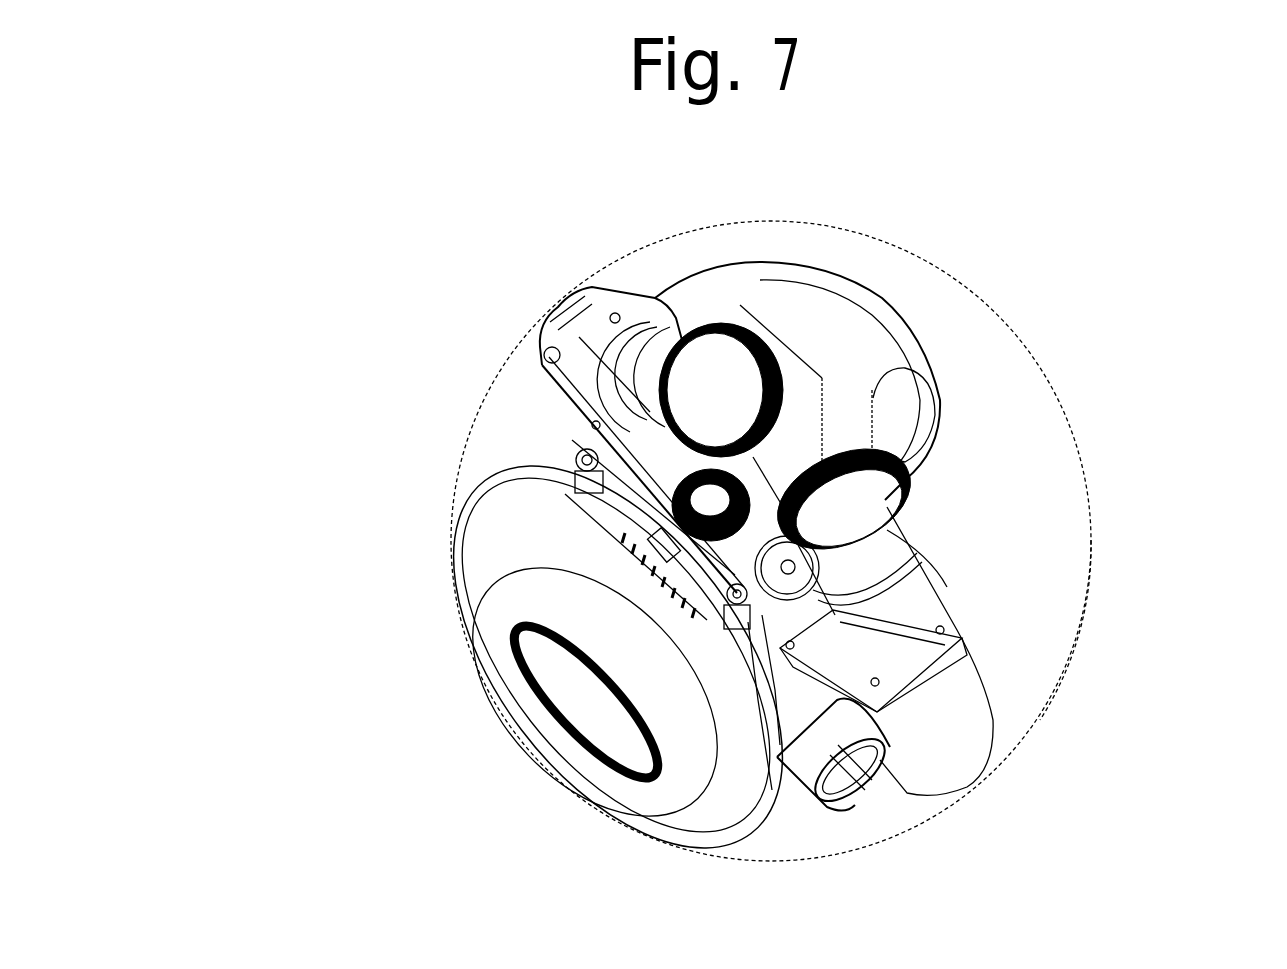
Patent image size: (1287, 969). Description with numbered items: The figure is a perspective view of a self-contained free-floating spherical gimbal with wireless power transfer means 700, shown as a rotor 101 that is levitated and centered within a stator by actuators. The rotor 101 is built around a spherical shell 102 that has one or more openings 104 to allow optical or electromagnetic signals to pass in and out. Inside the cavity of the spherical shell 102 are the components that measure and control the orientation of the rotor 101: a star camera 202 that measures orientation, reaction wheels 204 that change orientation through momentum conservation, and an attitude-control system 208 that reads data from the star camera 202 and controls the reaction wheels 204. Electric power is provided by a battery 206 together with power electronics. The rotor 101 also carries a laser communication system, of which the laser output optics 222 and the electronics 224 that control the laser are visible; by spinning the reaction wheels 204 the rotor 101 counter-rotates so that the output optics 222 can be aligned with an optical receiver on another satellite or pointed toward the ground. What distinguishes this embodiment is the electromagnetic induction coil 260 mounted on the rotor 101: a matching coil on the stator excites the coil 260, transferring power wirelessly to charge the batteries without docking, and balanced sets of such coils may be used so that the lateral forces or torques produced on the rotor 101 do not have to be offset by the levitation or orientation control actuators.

The self-contained free-floating spherical gimbal with wireless power transfer means 700 is at (250, 162).
The rotor 101 is at (1105, 517).
The spherical shell 102 is at (1090, 597).
The opening 104 is at (870, 297).
The battery 206 is at (853, 340).
The star camera 202 is at (855, 502).
The laser output optics 222 is at (697, 500).
The electronics 224 is at (628, 523).
The attitude-control system 208 is at (540, 537).
The electromagnetic induction coil 260 is at (505, 638).
The reaction wheels 204 is at (797, 610).